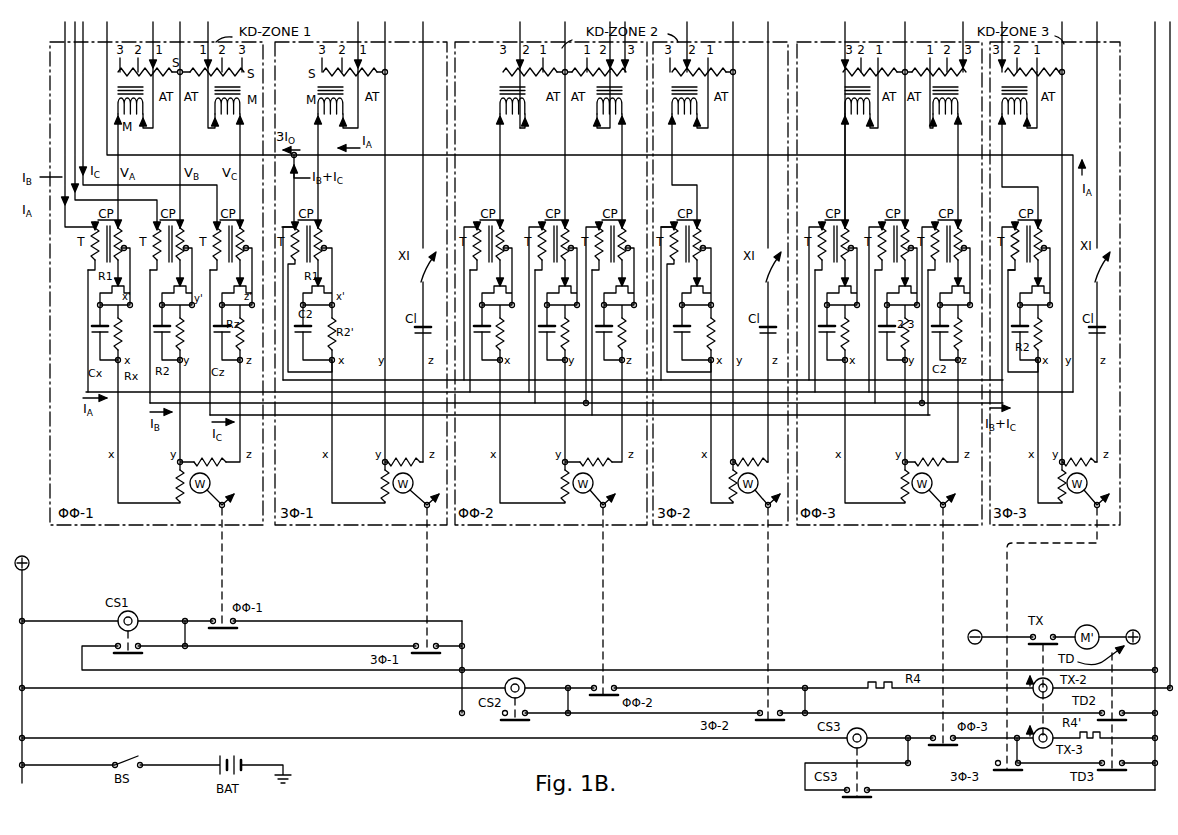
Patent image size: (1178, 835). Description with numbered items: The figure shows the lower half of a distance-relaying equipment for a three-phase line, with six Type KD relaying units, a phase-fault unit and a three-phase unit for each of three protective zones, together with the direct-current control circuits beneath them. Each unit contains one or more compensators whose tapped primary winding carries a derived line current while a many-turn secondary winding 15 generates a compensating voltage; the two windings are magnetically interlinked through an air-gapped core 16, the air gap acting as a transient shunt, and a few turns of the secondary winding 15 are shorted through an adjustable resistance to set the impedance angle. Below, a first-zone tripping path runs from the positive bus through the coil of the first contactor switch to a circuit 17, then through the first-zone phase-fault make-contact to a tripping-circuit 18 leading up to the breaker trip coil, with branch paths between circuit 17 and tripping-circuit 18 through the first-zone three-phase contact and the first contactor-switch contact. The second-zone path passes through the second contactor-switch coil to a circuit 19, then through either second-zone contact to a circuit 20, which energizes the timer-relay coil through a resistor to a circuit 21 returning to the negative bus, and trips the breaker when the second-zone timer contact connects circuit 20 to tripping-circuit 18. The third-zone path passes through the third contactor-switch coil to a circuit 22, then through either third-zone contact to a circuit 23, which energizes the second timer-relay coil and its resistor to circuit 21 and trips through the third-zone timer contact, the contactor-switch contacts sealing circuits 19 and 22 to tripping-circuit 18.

The secondary winding 15 is at (109, 285).
The air-gapped core 16 is at (97, 259).
The circuit 17 is at (176, 634).
The tripping-circuit 18 is at (1155, 457).
The circuit 19 is at (560, 701).
The circuit 20 is at (816, 701).
The circuit 21 is at (1168, 466).
The circuit 22 is at (967, 763).
The circuit 23 is at (1025, 750).